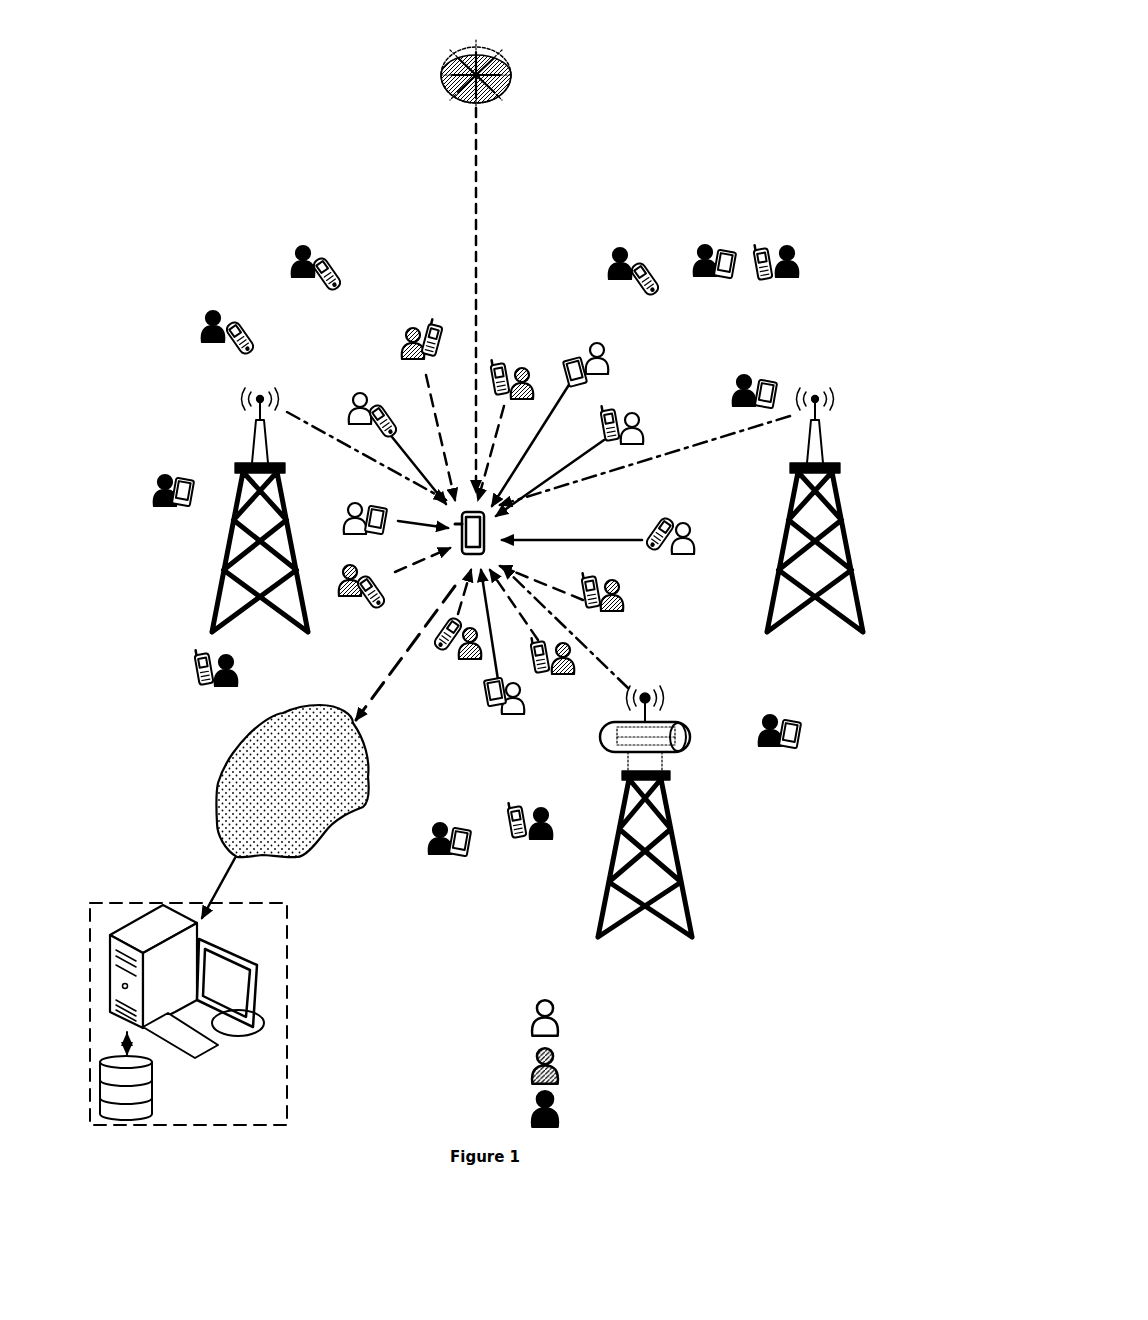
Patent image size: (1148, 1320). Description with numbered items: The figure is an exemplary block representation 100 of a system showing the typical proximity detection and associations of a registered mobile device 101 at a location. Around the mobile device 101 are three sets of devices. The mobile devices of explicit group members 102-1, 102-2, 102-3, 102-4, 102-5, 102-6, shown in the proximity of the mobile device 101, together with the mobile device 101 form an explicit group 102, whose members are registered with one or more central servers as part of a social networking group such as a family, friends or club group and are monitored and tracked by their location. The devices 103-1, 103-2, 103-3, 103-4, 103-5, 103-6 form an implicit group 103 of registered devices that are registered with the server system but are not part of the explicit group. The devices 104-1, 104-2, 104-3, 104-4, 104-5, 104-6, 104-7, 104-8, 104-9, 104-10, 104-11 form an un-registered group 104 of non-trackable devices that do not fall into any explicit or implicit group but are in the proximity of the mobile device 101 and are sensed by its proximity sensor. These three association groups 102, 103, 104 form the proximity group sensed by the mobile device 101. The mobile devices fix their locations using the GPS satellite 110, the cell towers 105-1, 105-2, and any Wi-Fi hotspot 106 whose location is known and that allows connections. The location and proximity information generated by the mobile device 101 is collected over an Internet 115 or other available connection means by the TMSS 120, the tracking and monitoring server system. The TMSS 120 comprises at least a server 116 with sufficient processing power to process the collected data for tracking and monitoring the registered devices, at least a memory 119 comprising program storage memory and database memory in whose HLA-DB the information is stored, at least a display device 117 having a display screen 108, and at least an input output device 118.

The block representation 100 is at (648, 172).
The mobile device 101 is at (488, 540).
The explicit group 102 is at (688, 1018).
The implicit group 103 is at (690, 1066).
The un-registered group 104 is at (652, 1114).
The explicit group member device 102-1 is at (358, 396).
The explicit group member device 102-2 is at (608, 348).
The explicit group member device 102-3 is at (642, 418).
The explicit group member device 102-4 is at (683, 558).
The explicit group member device 102-5 is at (506, 718).
The explicit group member device 102-6 is at (354, 506).
The implicit group member device 103-1 is at (413, 330).
The implicit group member device 103-2 is at (520, 370).
The implicit group member device 103-3 is at (622, 612).
The implicit group member device 103-4 is at (561, 680).
The implicit group member device 103-5 is at (462, 660).
The implicit group member device 103-6 is at (350, 570).
The un-registered device 104-1 is at (303, 247).
The un-registered device 104-2 is at (620, 250).
The un-registered device 104-3 is at (698, 250).
The un-registered device 104-4 is at (787, 283).
The un-registered device 104-5 is at (736, 380).
The un-registered device 104-6 is at (765, 718).
The un-registered device 104-7 is at (539, 846).
The un-registered device 104-8 is at (432, 828).
The un-registered device 104-9 is at (228, 690).
The un-registered device 104-10 is at (158, 480).
The un-registered device 104-11 is at (213, 312).
The cell tower 105-1 is at (834, 412).
The cell tower 105-2 is at (258, 415).
The Wi-Fi hotspot 106 is at (690, 752).
The display screen 108 is at (267, 986).
The GPS satellite 110 is at (462, 108).
The Internet 115 is at (345, 812).
The server 116 is at (128, 920).
The display device 117 is at (247, 1000).
The input output device 118 is at (238, 1032).
The memory 119 is at (150, 1112).
The TMSS 120 is at (275, 880).